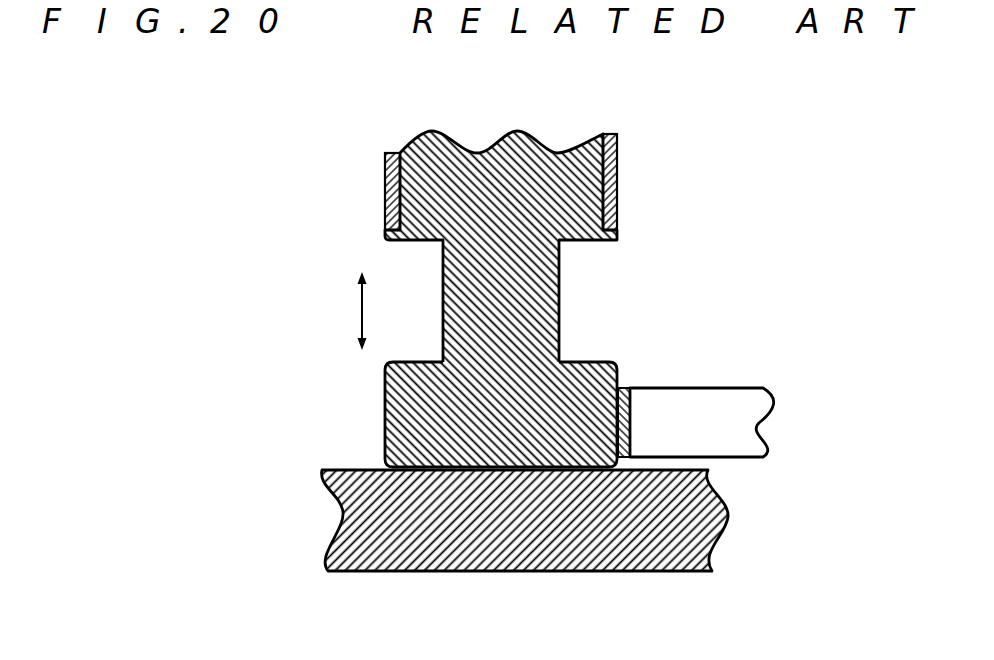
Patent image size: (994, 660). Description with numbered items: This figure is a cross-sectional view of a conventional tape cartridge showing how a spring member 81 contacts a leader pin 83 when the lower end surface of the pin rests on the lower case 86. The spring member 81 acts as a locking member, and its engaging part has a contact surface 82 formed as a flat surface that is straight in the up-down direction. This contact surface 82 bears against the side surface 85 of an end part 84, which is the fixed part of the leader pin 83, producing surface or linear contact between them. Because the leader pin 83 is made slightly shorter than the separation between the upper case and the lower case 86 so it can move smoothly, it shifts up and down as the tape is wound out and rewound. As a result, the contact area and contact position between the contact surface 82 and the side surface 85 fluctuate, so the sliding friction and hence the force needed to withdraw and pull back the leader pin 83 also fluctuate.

The spring member 81 is at (727, 388).
The contact surface 82 is at (612, 412).
The leader pin 83 is at (343, 152).
The end part 84 is at (387, 427).
The side surface 85 is at (620, 381).
The lower case 86 is at (343, 513).